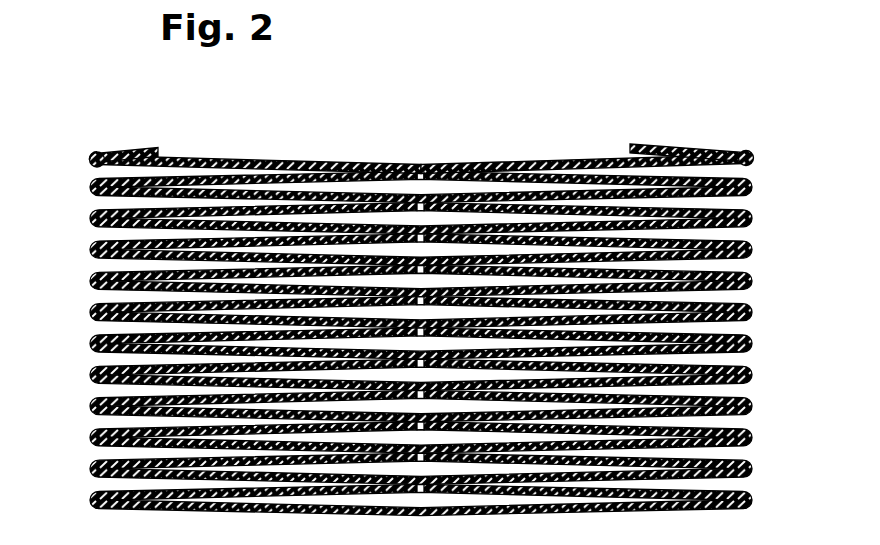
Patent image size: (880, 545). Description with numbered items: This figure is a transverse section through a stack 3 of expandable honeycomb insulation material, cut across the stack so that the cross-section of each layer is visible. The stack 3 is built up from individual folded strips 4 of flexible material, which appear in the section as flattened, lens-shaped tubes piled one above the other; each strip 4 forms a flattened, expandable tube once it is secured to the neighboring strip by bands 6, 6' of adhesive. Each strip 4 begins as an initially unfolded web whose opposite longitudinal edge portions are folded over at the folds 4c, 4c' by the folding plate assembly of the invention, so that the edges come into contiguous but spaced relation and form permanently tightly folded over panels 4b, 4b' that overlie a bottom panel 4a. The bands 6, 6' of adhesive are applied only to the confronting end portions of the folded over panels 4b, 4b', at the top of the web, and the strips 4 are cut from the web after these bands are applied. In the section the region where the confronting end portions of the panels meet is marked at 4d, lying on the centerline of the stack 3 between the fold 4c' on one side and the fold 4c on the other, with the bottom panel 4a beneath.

The stack 3 is at (435, 283).
The folded strips 4 is at (88, 346).
The bottom panel 4a is at (92, 166).
The folded over panel 4b is at (683, 125).
The folded over panel 4b' is at (165, 117).
The fold 4c is at (786, 164).
The fold 4c' is at (96, 106).
The joint 4d is at (418, 163).
The band of adhesive 6 is at (582, 133).
The band of adhesive 6' is at (260, 127).